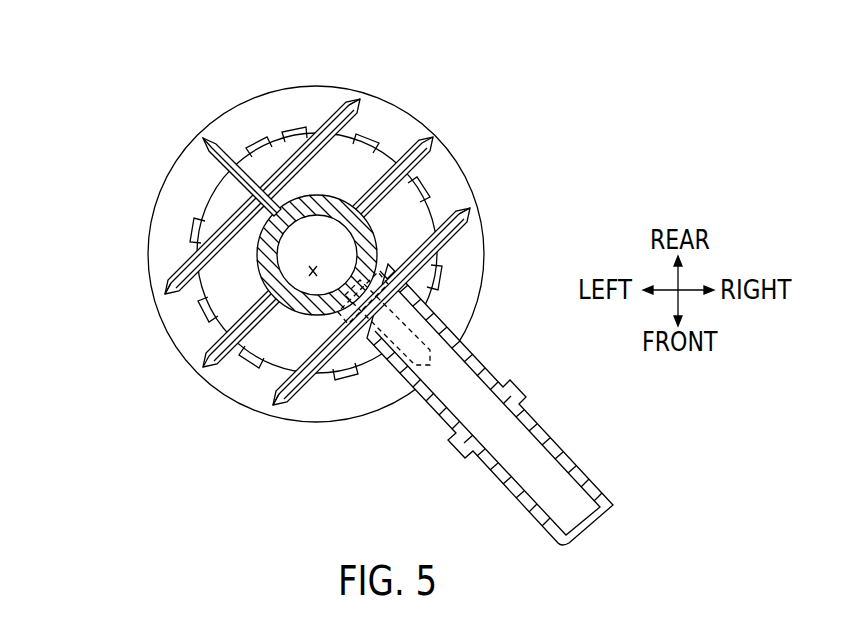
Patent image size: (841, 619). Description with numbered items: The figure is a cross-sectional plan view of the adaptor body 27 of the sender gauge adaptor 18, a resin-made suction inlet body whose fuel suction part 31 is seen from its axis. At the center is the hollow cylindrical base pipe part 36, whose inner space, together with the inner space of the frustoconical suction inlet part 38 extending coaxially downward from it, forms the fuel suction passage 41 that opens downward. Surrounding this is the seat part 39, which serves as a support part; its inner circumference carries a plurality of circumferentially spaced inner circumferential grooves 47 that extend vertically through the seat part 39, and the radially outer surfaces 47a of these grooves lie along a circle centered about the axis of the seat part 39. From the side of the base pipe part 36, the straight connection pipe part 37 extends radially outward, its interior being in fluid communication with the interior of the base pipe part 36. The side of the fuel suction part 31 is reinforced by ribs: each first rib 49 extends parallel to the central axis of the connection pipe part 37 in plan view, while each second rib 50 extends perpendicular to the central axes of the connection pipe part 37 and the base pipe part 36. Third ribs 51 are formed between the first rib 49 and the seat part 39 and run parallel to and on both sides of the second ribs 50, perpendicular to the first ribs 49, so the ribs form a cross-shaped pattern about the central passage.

The sender gauge adaptor 18 is at (324, 284).
The adaptor body 27 is at (324, 284).
The fuel suction part 31 is at (389, 93).
The base pipe part 36 is at (386, 145).
The connection pipe part 37 is at (553, 450).
The suction inlet part 38 is at (363, 302).
The seat part 39 is at (470, 266).
The fuel suction passage 41 is at (313, 275).
The inner circumferential grooves 47 is at (290, 266).
The radially outer surfaces 47a is at (282, 136).
The first ribs 49 is at (200, 142).
The second ribs 50 is at (437, 136).
The third ribs 51 is at (360, 102).